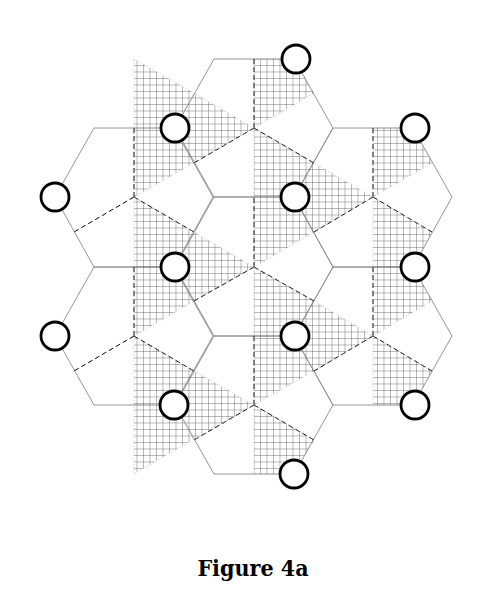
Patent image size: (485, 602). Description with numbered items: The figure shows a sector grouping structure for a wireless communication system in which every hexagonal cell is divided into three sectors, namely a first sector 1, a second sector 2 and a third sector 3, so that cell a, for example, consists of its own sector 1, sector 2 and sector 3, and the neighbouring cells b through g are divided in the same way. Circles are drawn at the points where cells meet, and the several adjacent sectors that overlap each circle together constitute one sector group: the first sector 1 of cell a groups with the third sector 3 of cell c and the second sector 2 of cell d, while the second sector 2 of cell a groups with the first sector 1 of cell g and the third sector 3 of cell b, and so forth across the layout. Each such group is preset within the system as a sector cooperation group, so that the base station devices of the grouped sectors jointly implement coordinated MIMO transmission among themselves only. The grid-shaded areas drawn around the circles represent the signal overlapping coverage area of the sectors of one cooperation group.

The sector 1 is at (283, 232).
The sector 2 is at (277, 301).
The sector 3 is at (231, 266).